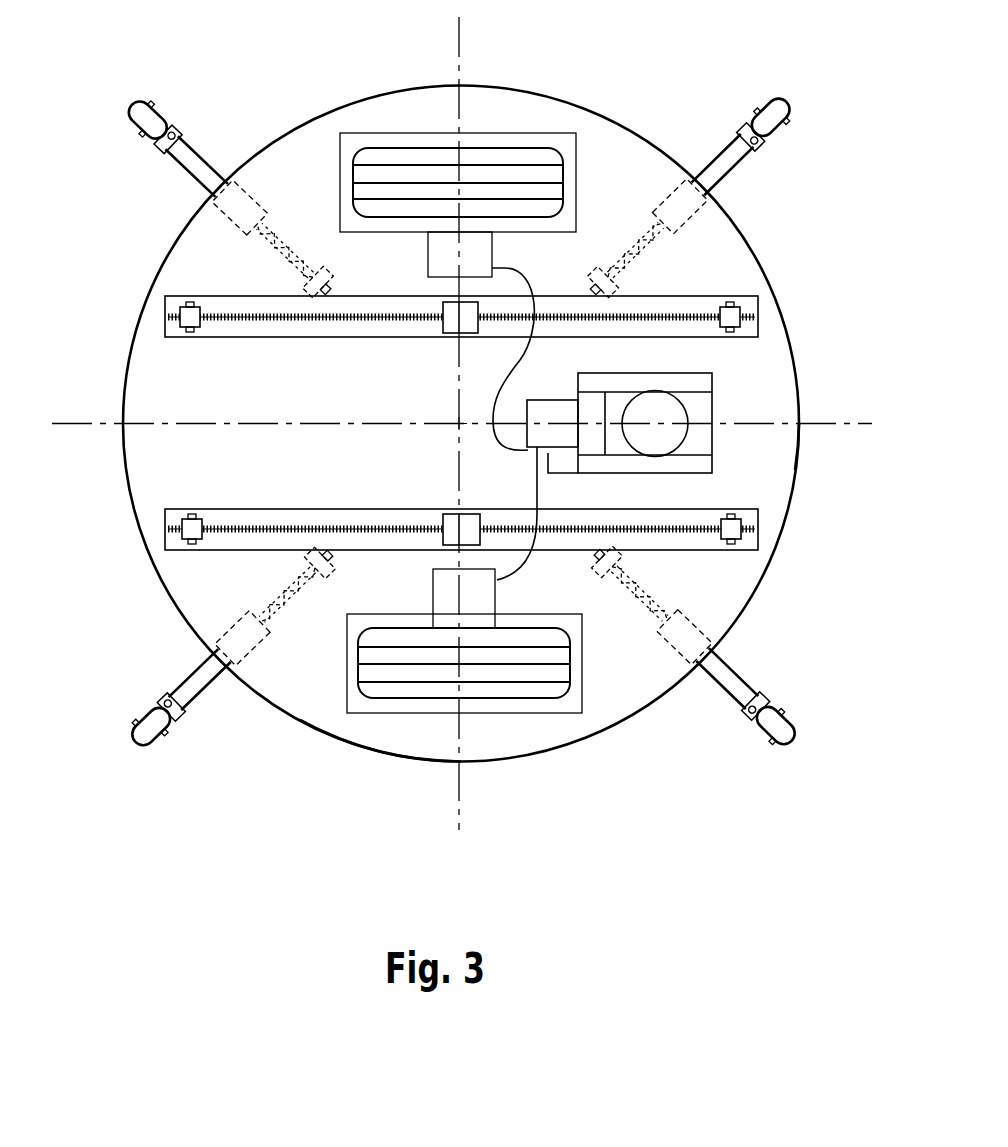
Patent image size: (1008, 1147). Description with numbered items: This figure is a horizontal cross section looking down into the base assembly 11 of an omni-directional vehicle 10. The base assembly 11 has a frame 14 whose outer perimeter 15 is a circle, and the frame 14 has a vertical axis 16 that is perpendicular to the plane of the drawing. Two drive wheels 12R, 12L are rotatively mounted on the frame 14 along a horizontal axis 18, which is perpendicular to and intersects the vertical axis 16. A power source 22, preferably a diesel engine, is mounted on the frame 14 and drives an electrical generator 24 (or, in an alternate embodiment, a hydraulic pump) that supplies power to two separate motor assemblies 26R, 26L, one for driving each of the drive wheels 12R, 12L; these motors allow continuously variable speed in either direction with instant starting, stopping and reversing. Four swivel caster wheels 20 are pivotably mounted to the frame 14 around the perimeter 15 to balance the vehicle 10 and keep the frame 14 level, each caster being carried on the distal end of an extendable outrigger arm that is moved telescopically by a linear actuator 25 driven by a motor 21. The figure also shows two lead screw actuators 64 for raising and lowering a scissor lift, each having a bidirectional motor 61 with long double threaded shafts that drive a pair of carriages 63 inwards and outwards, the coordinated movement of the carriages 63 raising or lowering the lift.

The omni-directional vehicle 10 is at (276, 817).
The base assembly 11 is at (337, 735).
The left drive wheel 12L is at (516, 148).
The right drive wheel 12R is at (522, 700).
The frame 14 is at (735, 245).
The outer perimeter 15 is at (788, 318).
The vertical axis 16 is at (459, 426).
The horizontal axis 18 is at (458, 37).
The swivel caster wheel 20 is at (134, 104).
The motor 21 is at (303, 283).
The power source 22 is at (713, 442).
The electrical generator 24 is at (548, 400).
The linear actuator 25 is at (303, 262).
The left motor assembly 26L is at (495, 262).
The right motor assembly 26R is at (497, 603).
The bidirectional motor 61 is at (446, 335).
The carriage 63 is at (192, 330).
The lead screw actuator 64 is at (318, 325).